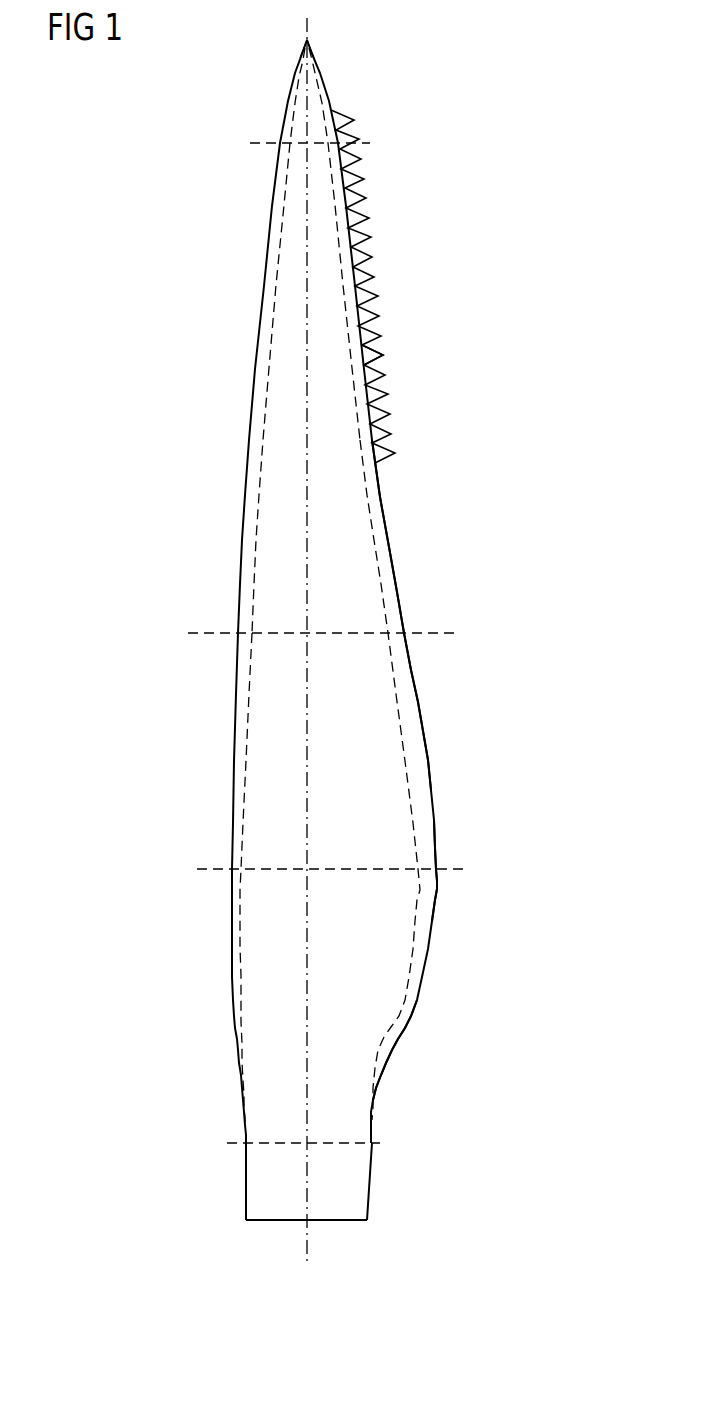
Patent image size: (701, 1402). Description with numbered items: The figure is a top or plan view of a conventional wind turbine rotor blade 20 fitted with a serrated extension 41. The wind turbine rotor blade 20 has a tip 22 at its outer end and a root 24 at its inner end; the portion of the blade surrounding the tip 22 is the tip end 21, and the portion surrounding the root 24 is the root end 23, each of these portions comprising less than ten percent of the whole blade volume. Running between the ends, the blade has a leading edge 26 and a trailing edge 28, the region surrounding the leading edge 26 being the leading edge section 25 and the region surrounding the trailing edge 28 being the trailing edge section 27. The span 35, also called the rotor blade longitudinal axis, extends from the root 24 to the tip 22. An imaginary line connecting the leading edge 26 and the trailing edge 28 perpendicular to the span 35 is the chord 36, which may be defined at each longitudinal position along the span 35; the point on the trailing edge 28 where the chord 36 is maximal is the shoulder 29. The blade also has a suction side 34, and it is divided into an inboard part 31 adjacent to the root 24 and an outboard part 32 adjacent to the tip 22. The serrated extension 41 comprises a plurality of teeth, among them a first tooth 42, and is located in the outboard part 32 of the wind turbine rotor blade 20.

The wind turbine rotor blade 20 is at (115, 490).
The tip end 21 is at (321, 109).
The tip 22 is at (308, 40).
The root end 23 is at (358, 1181).
The root 24 is at (334, 1222).
The leading edge section 25 is at (242, 716).
The leading edge 26 is at (248, 462).
The trailing edge section 27 is at (407, 712).
The trailing edge 28 is at (398, 603).
The shoulder 29 is at (437, 870).
The inboard part 31 is at (479, 771).
The outboard part 32 is at (428, 547).
The suction side 34 is at (353, 1042).
The span 35 is at (305, 1252).
The chord 36 is at (200, 869).
The serrated extension 41 is at (380, 282).
The first tooth 42 is at (388, 342).